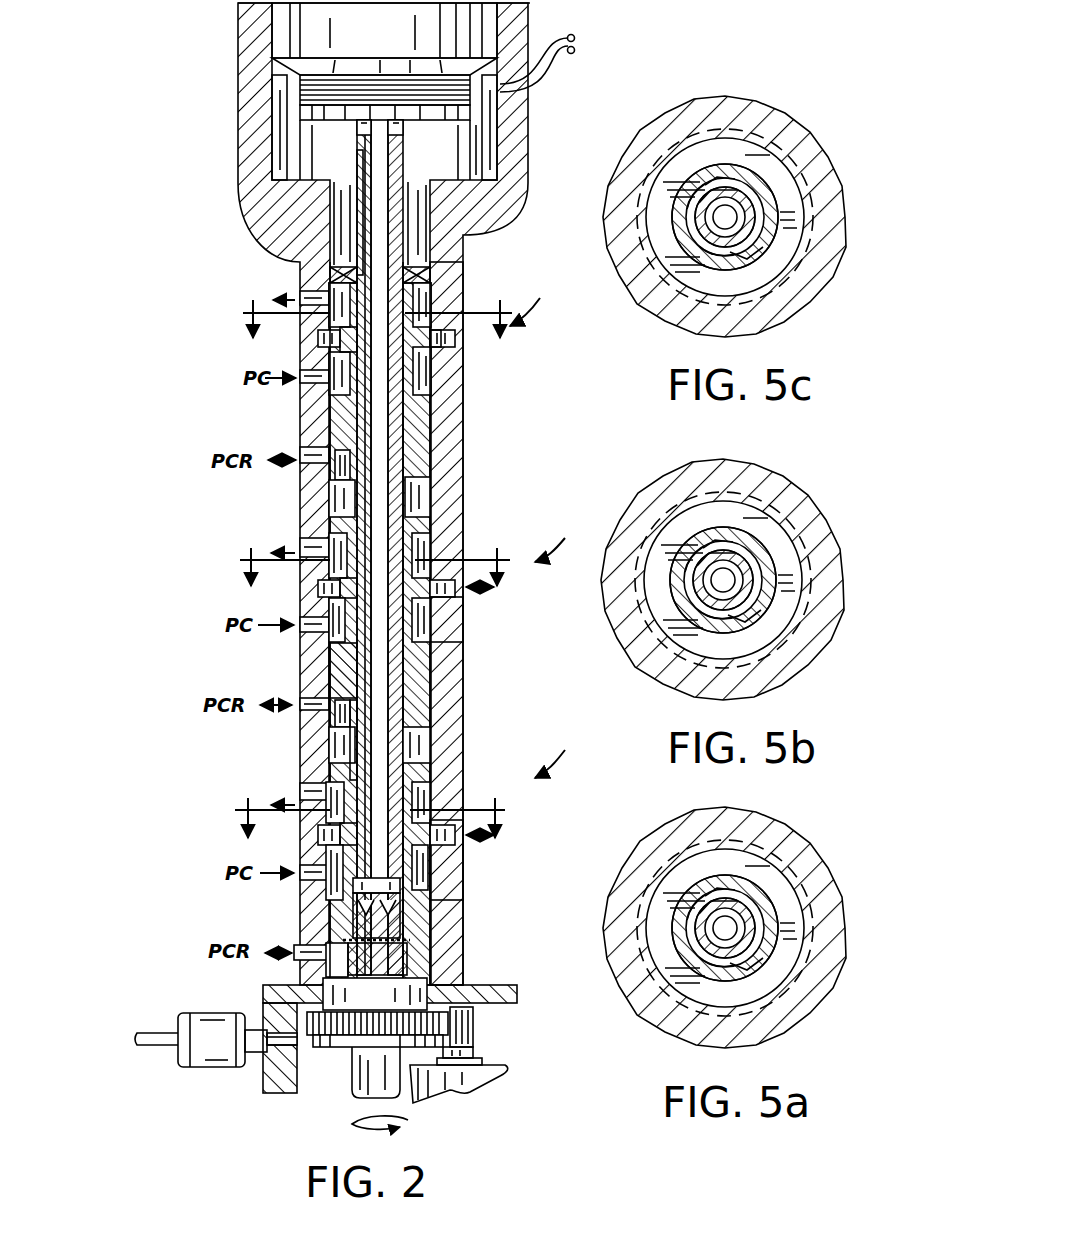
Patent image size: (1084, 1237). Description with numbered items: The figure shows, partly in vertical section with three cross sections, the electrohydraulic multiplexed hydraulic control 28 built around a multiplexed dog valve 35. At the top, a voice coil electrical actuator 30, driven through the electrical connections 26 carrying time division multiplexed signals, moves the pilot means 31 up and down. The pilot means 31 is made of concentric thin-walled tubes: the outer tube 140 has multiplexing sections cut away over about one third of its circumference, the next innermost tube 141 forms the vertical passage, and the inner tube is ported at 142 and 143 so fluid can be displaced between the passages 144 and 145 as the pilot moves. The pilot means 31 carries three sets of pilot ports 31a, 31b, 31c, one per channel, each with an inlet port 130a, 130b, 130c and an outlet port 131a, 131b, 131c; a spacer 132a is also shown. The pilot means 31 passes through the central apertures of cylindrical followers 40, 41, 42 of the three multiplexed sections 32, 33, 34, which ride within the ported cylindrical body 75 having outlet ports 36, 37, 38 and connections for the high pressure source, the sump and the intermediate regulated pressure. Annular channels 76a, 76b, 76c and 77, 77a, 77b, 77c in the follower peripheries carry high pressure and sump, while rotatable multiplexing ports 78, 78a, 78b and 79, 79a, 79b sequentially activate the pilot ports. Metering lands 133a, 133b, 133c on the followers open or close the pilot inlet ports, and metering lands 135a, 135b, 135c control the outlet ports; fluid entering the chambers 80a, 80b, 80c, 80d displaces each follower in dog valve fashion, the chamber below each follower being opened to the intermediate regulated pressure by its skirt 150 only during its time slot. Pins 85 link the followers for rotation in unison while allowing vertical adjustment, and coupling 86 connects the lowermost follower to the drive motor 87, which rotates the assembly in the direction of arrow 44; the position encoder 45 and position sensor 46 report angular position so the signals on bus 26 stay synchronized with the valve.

In FIG. 2, the TDM bus electrical connections 26 is at (577, 44).
In FIG. 2, the hydraulic control 28 is at (205, 68).
In FIG. 2, the voice coil electrical actuator 30 is at (388, 42).
In FIG. 2, the pilot means 31 is at (405, 162).
In FIG. 5C, the pilot means 31 is at (650, 184).
In FIG. 5B, the pilot means 31 is at (678, 519).
In FIG. 5A, the pilot means 31 is at (687, 862).
In FIG. 5C, the pilot port 31a is at (647, 232).
In FIG. 2, the pilot port 31b is at (335, 507).
In FIG. 5B, the pilot port 31b is at (660, 615).
In FIG. 2, the pilot port 31c is at (350, 750).
In FIG. 5A, the pilot port 31c is at (666, 964).
In FIG. 2, the multiplexed section 32 is at (612, 322).
In FIG. 2, the multiplexed section 33 is at (606, 537).
In FIG. 2, the multiplexed section 34 is at (592, 795).
In FIG. 2, the multiplexed dog valve 35 is at (296, 400).
In FIG. 2, the outlet port 36 is at (466, 340).
In FIG. 5C, the outlet port 36 is at (775, 213).
In FIG. 2, the outlet port 37 is at (440, 605).
In FIG. 5B, the outlet port 37 is at (767, 584).
In FIG. 2, the outlet port 38 is at (420, 880).
In FIG. 5A, the outlet port 38 is at (776, 939).
In FIG. 2, the follower 40 is at (465, 250).
In FIG. 5C, the follower 40 is at (782, 224).
In FIG. 2, the follower 41 is at (437, 500).
In FIG. 2, the follower 42 is at (440, 738).
In FIG. 2, the rotation arrow 44 is at (412, 1126).
In FIG. 2, the angular position indicator 45 is at (325, 1043).
In FIG. 2, the detector 46 is at (196, 1070).
In FIG. 2, the cylindrical body 75 is at (450, 438).
In FIG. 5C, the cylindrical body 75 is at (730, 213).
In FIG. 5B, the cylindrical body 75 is at (731, 574).
In FIG. 5A, the cylindrical body 75 is at (734, 925).
In FIG. 2, the annular channel 76a is at (432, 292).
In FIG. 2, the annular channel 76b is at (430, 530).
In FIG. 2, the annular channel 76c is at (430, 768).
In FIG. 5C, the annular channel 77 is at (696, 272).
In FIG. 5A, the annular channel 77 is at (683, 887).
In FIG. 2, the annular channel 77a is at (432, 376).
In FIG. 2, the annular channel 77b is at (440, 632).
In FIG. 2, the annular channel 77c is at (420, 888).
In FIG. 2, the multiplexing port 78 is at (355, 870).
In FIG. 5C, the multiplexing port 78a is at (798, 294).
In FIG. 5A, the multiplexing port 78a is at (670, 935).
In FIG. 5B, the multiplexing port 78b is at (793, 556).
In FIG. 2, the multiplexing port 79 is at (395, 928).
In FIG. 5C, the multiplexing port 79a is at (782, 270).
In FIG. 5A, the multiplexing port 79a is at (659, 919).
In FIG. 5B, the multiplexing port 79b is at (797, 570).
In FIG. 2, the chamber 80a is at (344, 172).
In FIG. 2, the chamber 80b is at (340, 447).
In FIG. 2, the chamber 80c is at (340, 683).
In FIG. 2, the chamber 80d is at (340, 950).
In FIG. 2, the pins 85 is at (432, 462).
In FIG. 2, the coupling 86 is at (430, 990).
In FIG. 2, the drive motor 87 is at (485, 1070).
In FIG. 2, the pilot inlet port 130a is at (340, 352).
In FIG. 2, the pilot inlet port 130b is at (340, 590).
In FIG. 2, the pilot inlet port 130c is at (350, 851).
In FIG. 2, the pilot outlet port 131a is at (345, 733).
In FIG. 2, the pilot outlet port 131b is at (340, 500).
In FIG. 2, the pilot outlet port 131c is at (365, 157).
In FIG. 2, the spacer 132a is at (355, 768).
In FIG. 2, the metering land 133a is at (340, 340).
In FIG. 2, the metering land 133b is at (335, 598).
In FIG. 2, the metering land 133c is at (345, 830).
In FIG. 2, the metering land 135a is at (455, 348).
In FIG. 2, the metering land 135b is at (455, 588).
In FIG. 2, the metering land 135c is at (455, 835).
In FIG. 5A, the outer tube 140 is at (745, 872).
In FIG. 5A, the next innermost tube 141 is at (787, 910).
In FIG. 2, the inner tube port 142 is at (398, 128).
In FIG. 2, the inner tube port 143 is at (370, 889).
In FIG. 2, the passage 144 is at (375, 905).
In FIG. 2, the passage 145 is at (488, 155).
In FIG. 2, the skirt 150 is at (333, 465).
In FIG. 5C, the skirt 150 is at (768, 210).
In FIG. 5B, the skirt 150 is at (698, 597).
In FIG. 5A, the skirt 150 is at (769, 928).